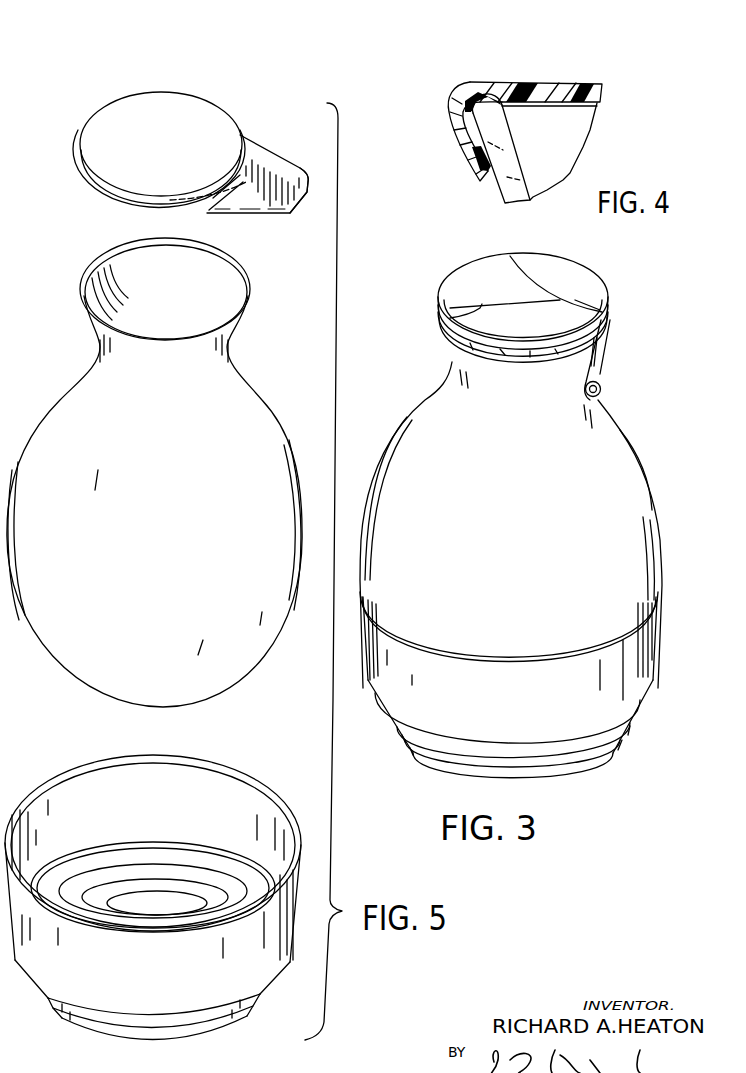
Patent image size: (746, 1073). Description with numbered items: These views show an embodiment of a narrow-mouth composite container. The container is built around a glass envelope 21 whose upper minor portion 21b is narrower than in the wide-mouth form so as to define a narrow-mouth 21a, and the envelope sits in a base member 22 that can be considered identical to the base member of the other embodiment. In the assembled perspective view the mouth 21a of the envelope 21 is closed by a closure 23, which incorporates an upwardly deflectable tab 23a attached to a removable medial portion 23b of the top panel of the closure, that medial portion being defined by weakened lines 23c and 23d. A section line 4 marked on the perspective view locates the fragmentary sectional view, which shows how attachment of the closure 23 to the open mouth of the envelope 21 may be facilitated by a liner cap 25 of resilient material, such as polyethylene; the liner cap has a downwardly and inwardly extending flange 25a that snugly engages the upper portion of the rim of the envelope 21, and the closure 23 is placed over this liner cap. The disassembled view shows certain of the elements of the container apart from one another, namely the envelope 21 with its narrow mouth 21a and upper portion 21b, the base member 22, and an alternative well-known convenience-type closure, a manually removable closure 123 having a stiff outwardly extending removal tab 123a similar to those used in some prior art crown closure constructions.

In FIG. 5, the glass envelope 21 is at (297, 444).
In FIG. 3, the glass envelope 21 is at (652, 433).
In FIG. 5, the narrow-mouth 21a is at (217, 280).
In FIG. 5, the upper minor portion 21b is at (227, 343).
In FIG. 5, the base member 22 is at (304, 903).
In FIG. 3, the base member 22 is at (669, 648).
In FIG. 3, the closure 23 is at (622, 316).
In FIG. 3, the upwardly deflectable tab 23a is at (600, 375).
In FIG. 3, the removable medial portion 23b is at (522, 297).
In FIG. 3, the weakened line 23c is at (574, 300).
In FIG. 3, the weakened line 23d is at (453, 318).
In FIG. 4, the liner cap 25 is at (513, 76).
In FIG. 4, the flange 25a is at (474, 161).
In FIG. 5, the manually removable closure 123 is at (261, 146).
In FIG. 5, the removal tab 123a is at (311, 197).
In FIG. 3, the section line 4— 4 is at (487, 395).